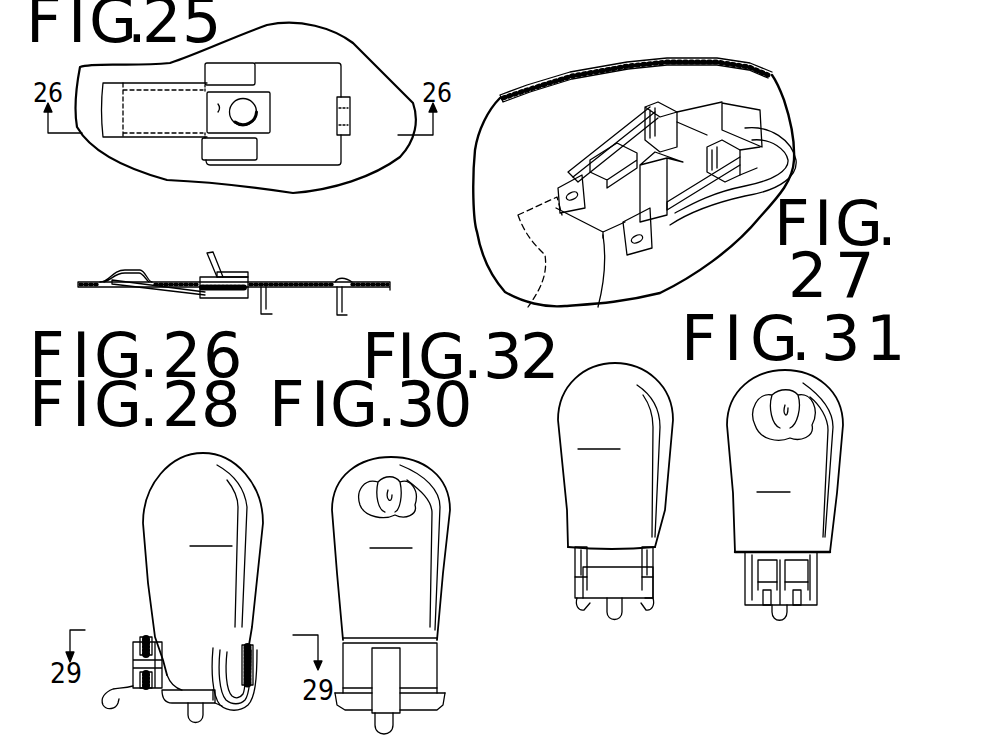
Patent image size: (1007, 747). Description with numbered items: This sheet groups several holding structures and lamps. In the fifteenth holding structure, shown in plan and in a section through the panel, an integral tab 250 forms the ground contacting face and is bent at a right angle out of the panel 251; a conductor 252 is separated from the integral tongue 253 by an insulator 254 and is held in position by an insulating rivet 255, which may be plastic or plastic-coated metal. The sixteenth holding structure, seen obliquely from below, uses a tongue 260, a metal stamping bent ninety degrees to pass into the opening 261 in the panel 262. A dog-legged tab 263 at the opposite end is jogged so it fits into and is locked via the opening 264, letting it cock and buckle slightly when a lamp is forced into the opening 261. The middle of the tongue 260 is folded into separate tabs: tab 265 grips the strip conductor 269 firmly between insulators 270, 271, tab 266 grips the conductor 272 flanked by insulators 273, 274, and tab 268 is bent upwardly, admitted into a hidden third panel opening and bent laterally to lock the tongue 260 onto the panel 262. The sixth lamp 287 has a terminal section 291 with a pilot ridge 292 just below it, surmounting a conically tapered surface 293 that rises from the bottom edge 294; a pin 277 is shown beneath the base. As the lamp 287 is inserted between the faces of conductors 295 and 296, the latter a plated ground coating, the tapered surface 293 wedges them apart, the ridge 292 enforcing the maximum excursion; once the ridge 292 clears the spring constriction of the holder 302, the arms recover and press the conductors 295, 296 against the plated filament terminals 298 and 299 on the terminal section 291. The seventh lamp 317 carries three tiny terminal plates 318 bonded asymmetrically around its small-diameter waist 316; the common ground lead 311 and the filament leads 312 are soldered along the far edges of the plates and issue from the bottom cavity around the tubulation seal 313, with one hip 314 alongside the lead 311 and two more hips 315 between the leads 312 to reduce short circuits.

In FIG. 25, the integral tab 250 is at (346, 117).
In FIG. 26, the integral tab 250 is at (340, 308).
In FIG. 25, the panel 251 is at (374, 176).
In FIG. 26, the panel 251 is at (86, 280).
In FIG. 25, the conductor 252 is at (271, 111).
In FIG. 26, the conductor 252 is at (274, 306).
In FIG. 25, the integral tongue 253 is at (130, 128).
In FIG. 26, the integral tongue 253 is at (135, 270).
In FIG. 26, the insulator 254 is at (205, 291).
In FIG. 25, the insulating rivet 255 is at (252, 103).
In FIG. 26, the insulating rivet 255 is at (232, 298).
In FIG. 27, the tongue 260 is at (622, 145).
In FIG. 27, the opening 261 is at (680, 160).
In FIG. 27, the panel 262 is at (775, 85).
In FIG. 27, the dog-legged tab 263 is at (530, 310).
In FIG. 27, the opening 264 is at (598, 307).
In FIG. 27, the tab 265 is at (567, 177).
In FIG. 27, the tab 266 is at (780, 195).
In FIG. 27, the tab 268 is at (733, 155).
In FIG. 27, the strip conductor 269 is at (660, 110).
In FIG. 27, the insulator 270 is at (610, 140).
In FIG. 27, the insulator 271 is at (585, 167).
In FIG. 27, the conductor 272 is at (740, 155).
In FIG. 27, the insulator 273 is at (745, 168).
In FIG. 27, the insulator 274 is at (752, 170).
In FIG. 28, the base pin 277 is at (215, 722).
In FIG. 30, the base pin 277 is at (375, 721).
In FIG. 28, the lamp 287 is at (203, 564).
In FIG. 30, the lamp 287 is at (391, 548).
In FIG. 28, the terminal section 291 is at (193, 653).
In FIG. 30, the terminal section 291 is at (428, 646).
In FIG. 28, the pilot ridge 292 is at (253, 667).
In FIG. 30, the pilot ridge 292 is at (434, 696).
In FIG. 28, the conically tapered surface 293 is at (246, 700).
In FIG. 30, the conically tapered surface 293 is at (432, 704).
In FIG. 28, the bottom edge 294 is at (233, 710).
In FIG. 30, the bottom edge 294 is at (425, 714).
In FIG. 28, the conductor 295 is at (137, 657).
In FIG. 28, the conductor 296 is at (246, 653).
In FIG. 28, the filament terminal 298 is at (180, 645).
In FIG. 30, the filament terminal 299 is at (396, 664).
In FIG. 28, the holder 302 is at (150, 640).
In FIG. 32, the common ground lead 311 is at (580, 594).
In FIG. 32, the filament leads 312 is at (645, 612).
In FIG. 31, the filament leads 312 is at (812, 600).
In FIG. 32, the tubulation seal 313 is at (605, 610).
In FIG. 31, the tubulation seal 313 is at (787, 620).
In FIG. 32, the hip 314 is at (575, 593).
In FIG. 32, the hips 315 is at (655, 598).
In FIG. 31, the hips 315 is at (800, 615).
In FIG. 32, the small-diameter lower portion 316 is at (587, 600).
In FIG. 31, the small-diameter lower portion 316 is at (767, 601).
In FIG. 32, the lamp 317 is at (615, 456).
In FIG. 31, the lamp 317 is at (785, 461).
In FIG. 32, the terminal plates 318 is at (636, 563).
In FIG. 31, the terminal plates 318 is at (792, 562).